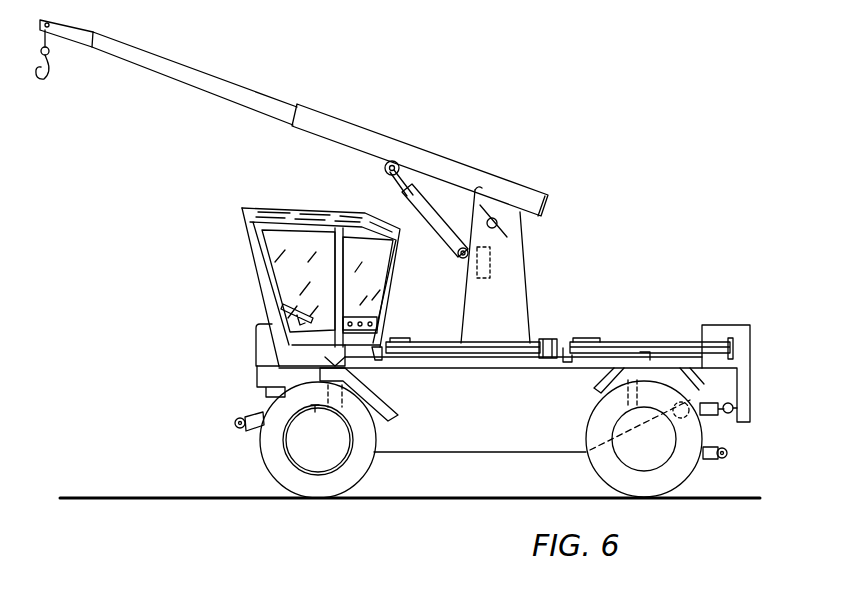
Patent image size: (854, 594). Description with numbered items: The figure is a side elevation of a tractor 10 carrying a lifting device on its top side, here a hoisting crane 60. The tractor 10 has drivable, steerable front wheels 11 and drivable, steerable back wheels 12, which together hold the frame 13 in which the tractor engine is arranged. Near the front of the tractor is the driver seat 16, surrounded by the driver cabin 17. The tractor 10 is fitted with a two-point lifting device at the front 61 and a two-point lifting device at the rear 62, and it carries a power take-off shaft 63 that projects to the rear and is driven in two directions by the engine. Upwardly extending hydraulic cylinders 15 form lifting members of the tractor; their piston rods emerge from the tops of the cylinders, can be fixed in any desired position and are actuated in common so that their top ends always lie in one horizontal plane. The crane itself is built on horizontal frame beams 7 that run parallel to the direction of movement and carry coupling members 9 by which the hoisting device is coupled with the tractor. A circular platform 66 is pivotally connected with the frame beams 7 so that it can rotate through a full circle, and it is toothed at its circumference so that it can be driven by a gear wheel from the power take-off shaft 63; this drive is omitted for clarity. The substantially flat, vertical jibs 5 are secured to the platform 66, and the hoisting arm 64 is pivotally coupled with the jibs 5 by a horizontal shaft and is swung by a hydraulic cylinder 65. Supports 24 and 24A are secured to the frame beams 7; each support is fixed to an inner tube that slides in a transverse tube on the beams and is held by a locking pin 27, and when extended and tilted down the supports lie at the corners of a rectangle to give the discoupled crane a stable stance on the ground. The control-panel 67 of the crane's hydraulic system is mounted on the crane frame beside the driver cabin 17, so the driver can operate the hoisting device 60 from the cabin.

The hoisting crane 60 is at (452, 158).
The hoisting arm 64 is at (310, 130).
The hydraulic cylinder 65 is at (413, 197).
The jib 5 is at (510, 260).
The driver cabin 17 is at (250, 247).
The driver seat 16 is at (367, 270).
The control-panel 67 is at (376, 320).
The coupling members 9 is at (330, 360).
The support 24A is at (478, 343).
The support 24 is at (670, 322).
The frame beams 7 is at (610, 358).
The circular platform 66 is at (545, 340).
The locking pin 27 is at (573, 368).
The tractor 10 is at (430, 453).
The frame 13 is at (497, 442).
The hydraulic cylinder 15 is at (600, 403).
The power take-off shaft 63 is at (706, 404).
The two-point lifting device at the front 61 is at (240, 418).
The front wheels 11 is at (268, 453).
The back wheels 12 is at (603, 468).
The two-point lifting device at the rear 62 is at (714, 461).